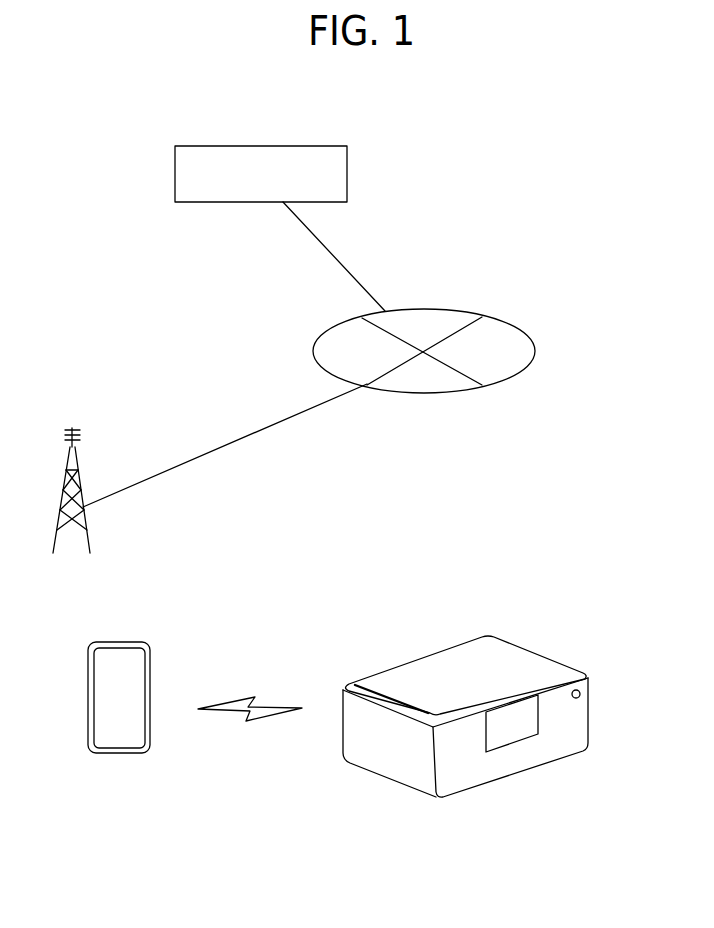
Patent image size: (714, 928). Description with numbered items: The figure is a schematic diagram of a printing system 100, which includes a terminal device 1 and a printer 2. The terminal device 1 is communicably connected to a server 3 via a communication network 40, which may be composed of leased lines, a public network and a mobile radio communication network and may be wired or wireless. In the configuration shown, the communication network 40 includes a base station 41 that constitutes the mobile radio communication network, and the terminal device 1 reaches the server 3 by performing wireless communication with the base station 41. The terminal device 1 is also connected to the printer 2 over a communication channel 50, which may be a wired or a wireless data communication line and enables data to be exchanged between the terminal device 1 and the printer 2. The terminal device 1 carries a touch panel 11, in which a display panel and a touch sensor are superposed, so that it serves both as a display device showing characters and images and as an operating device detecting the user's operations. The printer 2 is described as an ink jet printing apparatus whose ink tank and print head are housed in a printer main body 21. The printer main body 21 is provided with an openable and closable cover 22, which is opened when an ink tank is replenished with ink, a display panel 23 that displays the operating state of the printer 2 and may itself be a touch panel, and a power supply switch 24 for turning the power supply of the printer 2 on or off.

The printing system 100 is at (542, 186).
The server 3 is at (347, 174).
The communication network 40 is at (535, 351).
The base station 41 is at (88, 542).
The terminal device 1 is at (140, 692).
The touch panel 11 is at (133, 733).
The communication channel 50 is at (245, 722).
The printer 2 is at (490, 702).
The printer main body 21 is at (573, 727).
The cover 22 is at (533, 663).
The display panel 23 is at (530, 737).
The power supply switch 24 is at (581, 693).